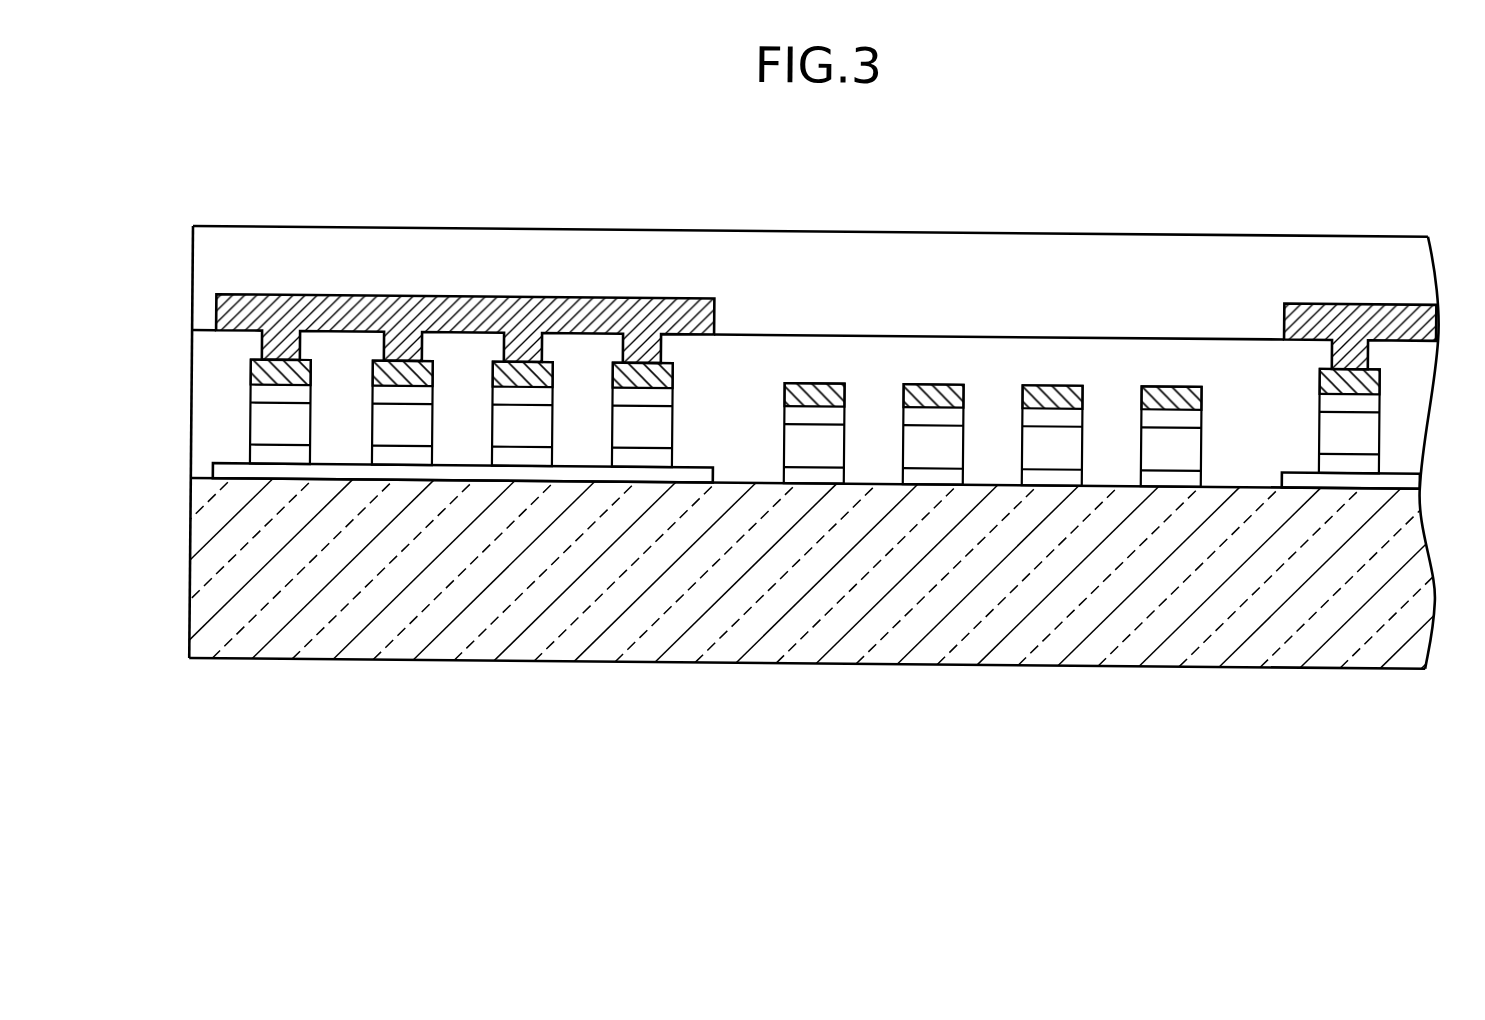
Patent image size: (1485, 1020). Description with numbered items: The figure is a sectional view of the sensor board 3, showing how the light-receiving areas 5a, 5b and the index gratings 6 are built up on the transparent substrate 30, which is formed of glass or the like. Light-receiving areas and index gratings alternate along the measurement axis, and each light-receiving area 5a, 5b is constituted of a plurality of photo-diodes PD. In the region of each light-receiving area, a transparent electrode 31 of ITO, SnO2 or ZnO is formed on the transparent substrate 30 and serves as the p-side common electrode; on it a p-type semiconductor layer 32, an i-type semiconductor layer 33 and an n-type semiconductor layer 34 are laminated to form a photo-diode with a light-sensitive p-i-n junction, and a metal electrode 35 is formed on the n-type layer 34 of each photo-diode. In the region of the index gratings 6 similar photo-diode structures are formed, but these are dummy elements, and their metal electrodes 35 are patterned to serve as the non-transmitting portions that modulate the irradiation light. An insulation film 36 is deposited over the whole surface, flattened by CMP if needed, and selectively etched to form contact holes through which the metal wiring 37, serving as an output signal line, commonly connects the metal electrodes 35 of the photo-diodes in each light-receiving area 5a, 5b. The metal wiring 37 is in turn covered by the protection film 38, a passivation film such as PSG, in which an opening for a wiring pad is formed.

The sensor board 3 is at (702, 684).
The light-receiving area 5a is at (344, 204).
The light-receiving area 5b is at (1315, 200).
The index grating 6 is at (787, 210).
The transparent substrate 30 is at (926, 659).
The transparent electrode 31 is at (467, 468).
The p-type semiconductor layer 32 is at (254, 452).
The i-type semiconductor layer 33 is at (254, 418).
The n-type semiconductor layer 34 is at (254, 392).
The metal electrode 35 is at (817, 378).
The insulation film 36 is at (737, 348).
The metal wiring 37 is at (579, 304).
The protection film 38 is at (462, 241).